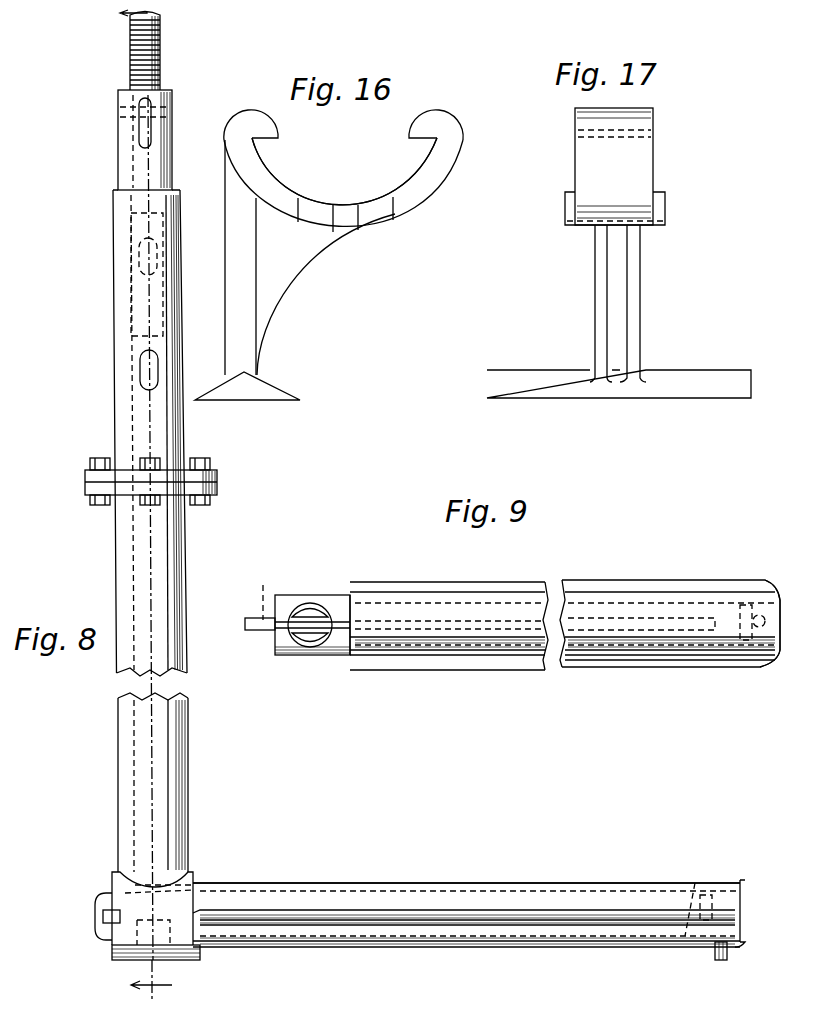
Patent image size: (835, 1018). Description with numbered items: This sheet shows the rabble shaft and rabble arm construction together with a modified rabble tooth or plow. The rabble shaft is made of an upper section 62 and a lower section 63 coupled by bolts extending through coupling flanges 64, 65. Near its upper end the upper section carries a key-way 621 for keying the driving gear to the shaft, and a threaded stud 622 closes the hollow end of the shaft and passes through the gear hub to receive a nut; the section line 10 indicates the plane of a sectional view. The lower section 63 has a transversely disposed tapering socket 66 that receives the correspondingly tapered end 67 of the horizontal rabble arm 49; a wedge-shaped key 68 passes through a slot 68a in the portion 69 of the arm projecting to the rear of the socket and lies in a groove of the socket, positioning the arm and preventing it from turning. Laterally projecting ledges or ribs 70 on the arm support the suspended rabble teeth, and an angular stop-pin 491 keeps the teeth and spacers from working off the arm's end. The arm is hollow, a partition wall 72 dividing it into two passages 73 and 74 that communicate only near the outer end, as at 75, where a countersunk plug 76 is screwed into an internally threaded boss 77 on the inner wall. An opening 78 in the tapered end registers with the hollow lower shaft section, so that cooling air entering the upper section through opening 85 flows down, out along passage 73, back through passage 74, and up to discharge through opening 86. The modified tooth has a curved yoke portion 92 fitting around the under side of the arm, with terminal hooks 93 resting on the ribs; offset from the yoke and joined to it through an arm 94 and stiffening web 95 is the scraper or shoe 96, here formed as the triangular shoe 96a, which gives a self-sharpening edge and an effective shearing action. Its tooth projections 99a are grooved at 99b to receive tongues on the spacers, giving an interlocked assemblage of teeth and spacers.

In FIG. 8, the section line 10 is at (126, 510).
In FIG. 8, the horizontal rabble arm 49 is at (445, 883).
In FIG. 8, the upper section 62 is at (113, 300).
In FIG. 8, the lower section 63 is at (188, 580).
In FIG. 8, the coupling flange 64 is at (217, 472).
In FIG. 8, the coupling flange 65 is at (217, 488).
In FIG. 8, the tapering socket 66 is at (112, 952).
In FIG. 9, the tapered end 67 is at (300, 655).
In FIG. 8, the wedge-shaped key 68 is at (103, 918).
In FIG. 8, the slot 68a is at (100, 900).
In FIG. 9, the slot 68a is at (267, 599).
In FIG. 8, the projecting portion of the rabble arm 69 is at (117, 880).
In FIG. 8, the laterally projecting ledges or ribs 70 is at (352, 915).
In FIG. 8, the partition wall 72 is at (690, 878).
In FIG. 9, the partition wall 72 is at (640, 580).
In FIG. 9, the passage 73 is at (315, 608).
In FIG. 9, the passage 74 is at (310, 640).
In FIG. 9, the communication near outer end 75 is at (718, 660).
In FIG. 8, the countersunk plug 76 is at (745, 900).
In FIG. 9, the countersunk plug 76 is at (772, 580).
In FIG. 8, the internally threaded boss 77 is at (706, 895).
In FIG. 9, the internally threaded boss 77 is at (748, 640).
In FIG. 9, the opening 78 is at (312, 612).
In FIG. 8, the opening 85 is at (172, 245).
In FIG. 8, the opening 86 is at (140, 378).
In FIG. 16, the curved yoke portion 92 is at (418, 210).
In FIG. 17, the curved yoke portion 92 is at (580, 175).
In FIG. 16, the terminal hooks 93 is at (405, 145).
In FIG. 17, the arm 94 is at (637, 294).
In FIG. 16, the stiffening web 95 is at (278, 290).
In FIG. 17, the stiffening web 95 is at (608, 288).
In FIG. 16, the scraper or shoe 96 is at (225, 310).
In FIG. 16, the shoe or scraper 96a is at (272, 386).
In FIG. 17, the shoe or scraper 96a is at (533, 372).
In FIG. 16, the tooth projections 99a is at (385, 221).
In FIG. 17, the tooth projections 99a is at (568, 200).
In FIG. 16, the groove or recess 99b is at (352, 225).
In FIG. 8, the angular stop-pin 491 is at (715, 955).
In FIG. 8, the key-way 621 is at (145, 125).
In FIG. 8, the threaded stud 622 is at (160, 45).